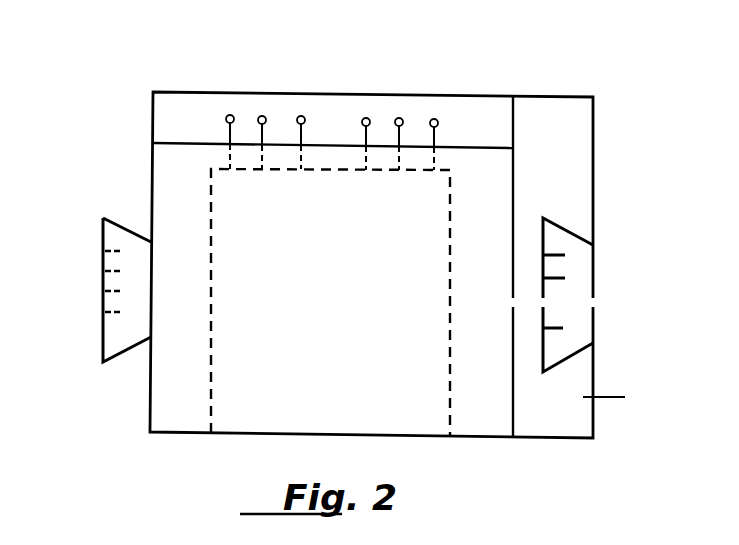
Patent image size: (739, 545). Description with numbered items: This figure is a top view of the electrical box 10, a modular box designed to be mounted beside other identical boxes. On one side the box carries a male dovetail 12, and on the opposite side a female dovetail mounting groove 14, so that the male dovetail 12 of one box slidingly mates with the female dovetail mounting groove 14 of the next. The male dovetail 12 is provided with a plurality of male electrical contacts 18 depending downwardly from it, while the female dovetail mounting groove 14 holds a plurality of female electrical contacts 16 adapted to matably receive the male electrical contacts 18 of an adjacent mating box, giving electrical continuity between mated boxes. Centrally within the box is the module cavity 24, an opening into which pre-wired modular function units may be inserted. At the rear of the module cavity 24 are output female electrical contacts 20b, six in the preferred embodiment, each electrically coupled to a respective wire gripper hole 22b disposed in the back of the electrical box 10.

The electrical box 10 is at (652, 116).
The male dovetail 12 is at (118, 233).
The female dovetail mounting groove 14 is at (576, 269).
The female electrical contacts 16 is at (560, 326).
The male electrical contacts 18 is at (117, 311).
The female electrical contacts 20b is at (263, 155).
The wire gripper holes 22b is at (232, 114).
The module cavity 24 is at (402, 397).